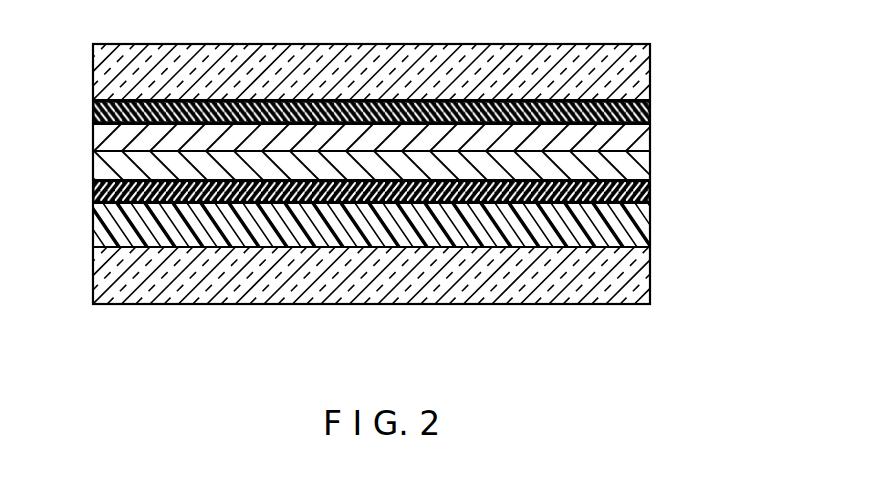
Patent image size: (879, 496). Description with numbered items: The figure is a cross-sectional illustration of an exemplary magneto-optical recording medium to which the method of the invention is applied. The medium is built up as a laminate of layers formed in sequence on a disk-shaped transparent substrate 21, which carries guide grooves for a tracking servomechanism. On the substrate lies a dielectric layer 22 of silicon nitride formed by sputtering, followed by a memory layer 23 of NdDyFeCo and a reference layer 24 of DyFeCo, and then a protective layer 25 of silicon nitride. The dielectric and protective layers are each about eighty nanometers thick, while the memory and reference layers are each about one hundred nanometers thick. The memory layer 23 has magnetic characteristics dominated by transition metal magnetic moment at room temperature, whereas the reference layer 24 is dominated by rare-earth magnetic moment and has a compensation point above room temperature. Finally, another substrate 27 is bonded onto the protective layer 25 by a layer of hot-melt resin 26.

The transparent substrate 21 is at (650, 67).
The dielectric layer 22 is at (93, 113).
The memory layer 23 is at (650, 140).
The reference layer 24 is at (650, 163).
The protective layer 25 is at (93, 195).
The hot-melt resin 26 is at (650, 222).
The substrate 27 is at (650, 267).